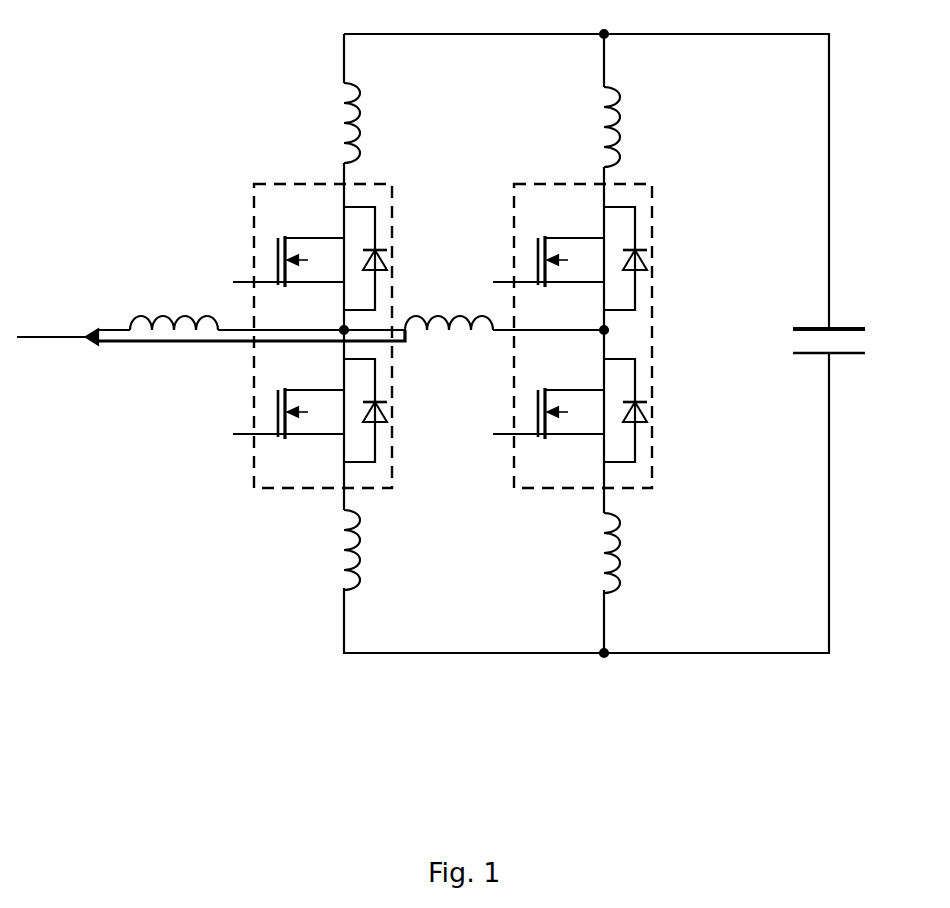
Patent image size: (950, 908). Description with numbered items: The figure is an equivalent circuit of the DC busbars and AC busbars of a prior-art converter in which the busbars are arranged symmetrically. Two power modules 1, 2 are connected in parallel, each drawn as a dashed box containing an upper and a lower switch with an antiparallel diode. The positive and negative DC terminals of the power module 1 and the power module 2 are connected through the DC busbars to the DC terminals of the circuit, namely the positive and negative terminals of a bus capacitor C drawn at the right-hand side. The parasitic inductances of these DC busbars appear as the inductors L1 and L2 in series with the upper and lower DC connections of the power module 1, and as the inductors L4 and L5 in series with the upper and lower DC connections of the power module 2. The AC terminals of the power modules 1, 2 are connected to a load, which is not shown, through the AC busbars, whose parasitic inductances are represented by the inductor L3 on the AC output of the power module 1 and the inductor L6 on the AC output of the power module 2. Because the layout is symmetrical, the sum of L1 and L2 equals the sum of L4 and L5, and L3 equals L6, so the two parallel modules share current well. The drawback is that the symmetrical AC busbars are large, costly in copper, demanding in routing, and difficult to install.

The power module 1 is at (254, 252).
The power module 2 is at (514, 252).
The parasitic inductance of the DC busbar L1 is at (311, 123).
The parasitic inductance of the DC busbar L2 is at (324, 550).
The parasitic inductance of the AC busbar L3 is at (174, 305).
The parasitic inductance of the DC busbar L4 is at (583, 127).
The parasitic inductance of the DC busbar L5 is at (583, 553).
The parasitic inductance of the AC busbar L6 is at (449, 305).
The bus capacitor C is at (812, 342).